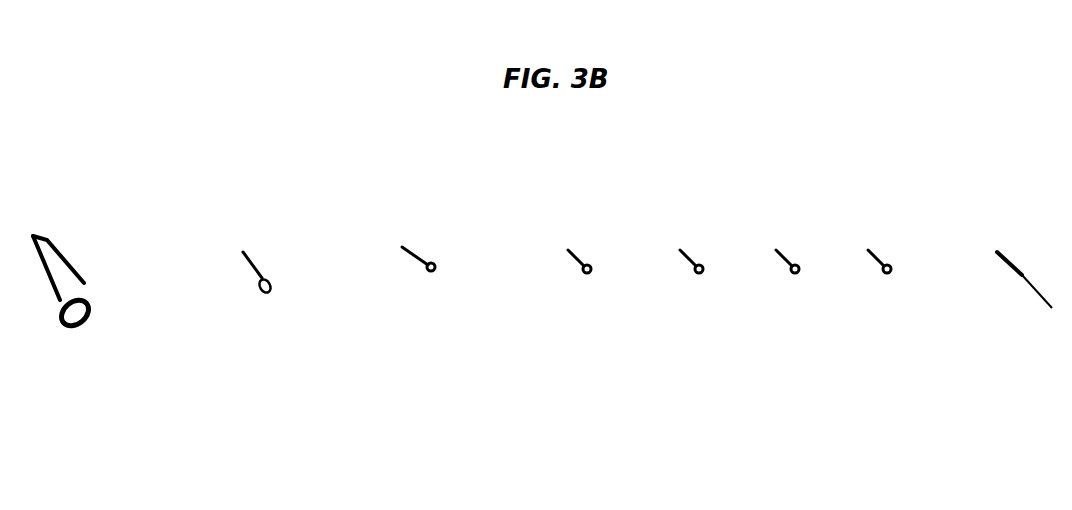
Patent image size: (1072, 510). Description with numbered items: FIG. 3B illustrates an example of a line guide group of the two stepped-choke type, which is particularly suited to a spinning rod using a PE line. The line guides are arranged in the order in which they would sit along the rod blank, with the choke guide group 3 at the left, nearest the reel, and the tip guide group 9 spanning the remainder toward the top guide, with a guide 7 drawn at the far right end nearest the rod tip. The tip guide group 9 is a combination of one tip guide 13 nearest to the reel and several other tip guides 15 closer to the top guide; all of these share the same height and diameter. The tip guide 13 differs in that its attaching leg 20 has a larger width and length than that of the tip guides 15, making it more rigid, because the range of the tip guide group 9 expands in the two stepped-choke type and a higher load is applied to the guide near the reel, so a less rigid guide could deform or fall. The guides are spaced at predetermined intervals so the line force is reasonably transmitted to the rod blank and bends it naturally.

The choke guide group 3 is at (50, 350).
The tip top guide 7 is at (1060, 304).
The tip guide group 9 is at (921, 350).
The tip guide 13 is at (471, 228).
The tip guide 15 is at (922, 228).
The attaching leg 20 is at (416, 260).